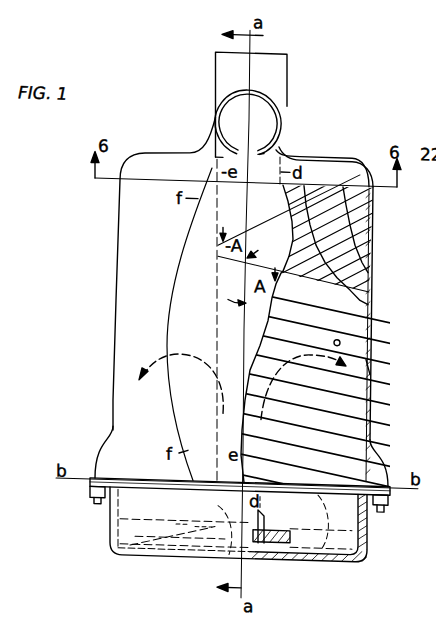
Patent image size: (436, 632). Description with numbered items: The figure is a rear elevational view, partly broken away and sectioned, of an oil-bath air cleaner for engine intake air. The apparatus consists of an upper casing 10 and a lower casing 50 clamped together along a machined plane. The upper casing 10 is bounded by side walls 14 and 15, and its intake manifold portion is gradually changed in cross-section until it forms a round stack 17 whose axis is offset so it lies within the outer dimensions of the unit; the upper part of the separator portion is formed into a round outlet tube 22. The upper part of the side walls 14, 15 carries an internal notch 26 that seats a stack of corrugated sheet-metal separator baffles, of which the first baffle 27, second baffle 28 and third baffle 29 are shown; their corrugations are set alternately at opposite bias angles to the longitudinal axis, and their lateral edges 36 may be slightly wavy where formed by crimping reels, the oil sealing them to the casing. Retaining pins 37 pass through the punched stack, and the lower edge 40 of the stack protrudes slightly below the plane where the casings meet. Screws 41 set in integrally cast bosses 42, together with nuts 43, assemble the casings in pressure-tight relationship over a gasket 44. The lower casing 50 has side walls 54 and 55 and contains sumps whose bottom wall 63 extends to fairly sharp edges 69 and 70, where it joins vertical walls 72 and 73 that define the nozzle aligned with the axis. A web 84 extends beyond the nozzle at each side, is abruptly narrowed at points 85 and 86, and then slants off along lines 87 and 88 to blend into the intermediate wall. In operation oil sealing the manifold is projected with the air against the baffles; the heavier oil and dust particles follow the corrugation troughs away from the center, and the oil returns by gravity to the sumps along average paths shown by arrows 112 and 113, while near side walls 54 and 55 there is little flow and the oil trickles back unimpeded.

The upper casing 10 is at (110, 307).
The side wall 14 is at (118, 242).
The round stack 17 is at (214, 60).
The outlet tube 22 is at (270, 101).
The internal notch 26 is at (366, 180).
The side wall 15 is at (375, 228).
The third baffle 29 is at (373, 246).
The second baffle 28 is at (355, 266).
The first baffle 27 is at (370, 304).
The lateral edges 36 is at (377, 329).
The retaining pins 37 is at (375, 358).
The arrow 112 is at (373, 367).
The arrow 113 is at (165, 355).
The bosses 42 is at (97, 449).
The gasket 44 is at (375, 482).
The nuts 43 is at (90, 498).
The screws 41 is at (100, 507).
The side wall 54 is at (110, 517).
The lower casing 50 is at (103, 552).
The lower edge 40 is at (368, 513).
The side wall 55 is at (368, 533).
The edge 70 is at (216, 534).
The web 84 is at (214, 532).
The slant line 88 is at (182, 526).
The narrowing point 85 is at (200, 528).
The vertical wall 73 is at (230, 556).
The vertical wall 72 is at (260, 546).
The edge 69 is at (262, 541).
The narrowing point 86 is at (279, 529).
The bottom wall 63 is at (289, 530).
The slant line 87 is at (307, 528).